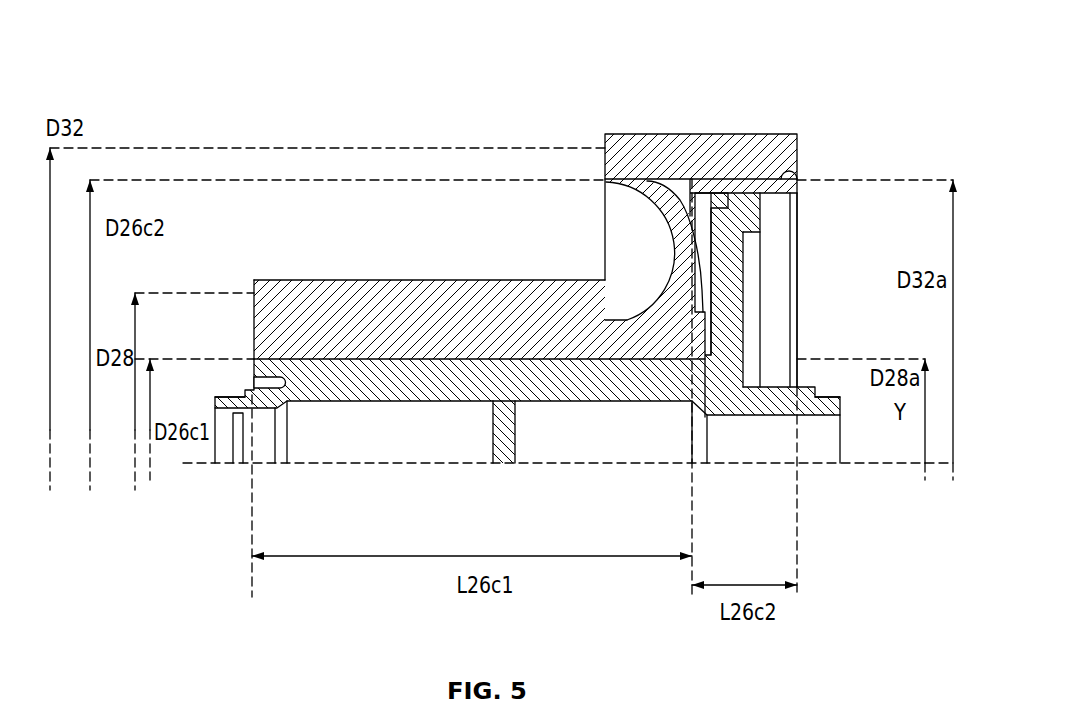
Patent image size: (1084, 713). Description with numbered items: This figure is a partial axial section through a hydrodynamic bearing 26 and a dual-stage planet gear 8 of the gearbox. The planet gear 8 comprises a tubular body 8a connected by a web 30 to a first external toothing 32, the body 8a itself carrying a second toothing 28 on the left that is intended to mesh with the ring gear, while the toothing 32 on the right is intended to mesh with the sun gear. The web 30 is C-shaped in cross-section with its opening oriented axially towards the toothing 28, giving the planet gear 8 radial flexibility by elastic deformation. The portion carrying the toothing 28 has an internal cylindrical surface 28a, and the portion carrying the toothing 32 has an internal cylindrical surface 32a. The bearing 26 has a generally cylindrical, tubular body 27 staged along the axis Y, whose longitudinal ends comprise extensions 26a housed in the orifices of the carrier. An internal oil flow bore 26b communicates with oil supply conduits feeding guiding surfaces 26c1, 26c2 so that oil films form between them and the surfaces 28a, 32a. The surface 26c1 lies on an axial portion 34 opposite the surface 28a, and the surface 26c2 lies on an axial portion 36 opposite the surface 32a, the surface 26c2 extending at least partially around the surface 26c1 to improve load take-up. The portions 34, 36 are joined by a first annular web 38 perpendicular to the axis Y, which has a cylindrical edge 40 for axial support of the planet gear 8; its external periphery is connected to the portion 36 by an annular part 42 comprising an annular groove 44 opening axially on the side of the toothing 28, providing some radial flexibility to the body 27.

The planet gear 8 is at (609, 127).
The tubular body 8a is at (250, 336).
The hydrodynamic bearing 26 is at (826, 378).
The extensions 26a is at (228, 396).
The internal oil flow bore 26b is at (408, 428).
The guiding surface 26c1 is at (333, 360).
The guiding surface 26c2 is at (790, 168).
The body 27 is at (604, 404).
The second toothing 28 is at (275, 277).
The internal cylindrical surface 28a is at (392, 366).
The web 30 is at (654, 215).
The first external toothing 32 is at (717, 129).
The internal cylindrical surface 32a is at (750, 186).
The axial portion 34 is at (467, 390).
The axial portion 36 is at (703, 190).
The first annular web 38 is at (733, 298).
The cylindrical edge 40 is at (715, 335).
The annular part 42 is at (745, 222).
The annular groove 44 is at (714, 192).